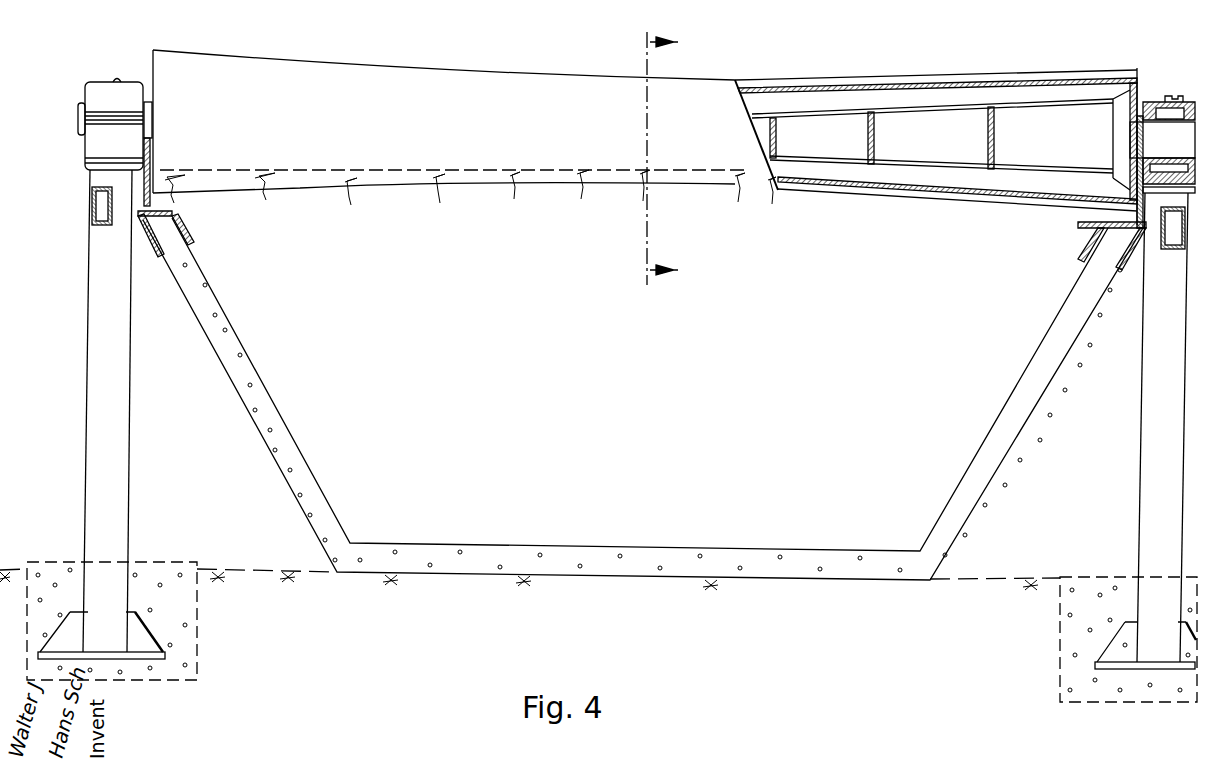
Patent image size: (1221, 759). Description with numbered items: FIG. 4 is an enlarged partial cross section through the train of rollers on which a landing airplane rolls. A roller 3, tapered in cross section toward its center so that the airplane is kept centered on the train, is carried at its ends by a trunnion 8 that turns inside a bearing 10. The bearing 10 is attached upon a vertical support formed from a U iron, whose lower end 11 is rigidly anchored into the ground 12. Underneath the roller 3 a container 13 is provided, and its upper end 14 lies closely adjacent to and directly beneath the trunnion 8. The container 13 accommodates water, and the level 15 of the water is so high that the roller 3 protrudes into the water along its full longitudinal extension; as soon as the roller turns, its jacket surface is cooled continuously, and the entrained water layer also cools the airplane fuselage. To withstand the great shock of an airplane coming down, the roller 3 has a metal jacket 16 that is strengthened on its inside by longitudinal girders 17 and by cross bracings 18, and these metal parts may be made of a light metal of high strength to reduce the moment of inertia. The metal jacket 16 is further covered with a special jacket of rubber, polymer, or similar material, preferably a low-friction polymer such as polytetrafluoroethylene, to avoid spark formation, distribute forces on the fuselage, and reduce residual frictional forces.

The roller 3 is at (540, 95).
The trunnion 8 is at (1176, 145).
The bearing 10 is at (1183, 98).
The lower end of support 11 is at (1168, 594).
The ground 12 is at (902, 602).
The container 13 is at (450, 558).
The upper end of container 14 is at (156, 145).
The water level 15 is at (271, 166).
The metal jacket 16 is at (866, 86).
The longitudinal girder 17 is at (971, 96).
The cross bracing 18 is at (878, 165).